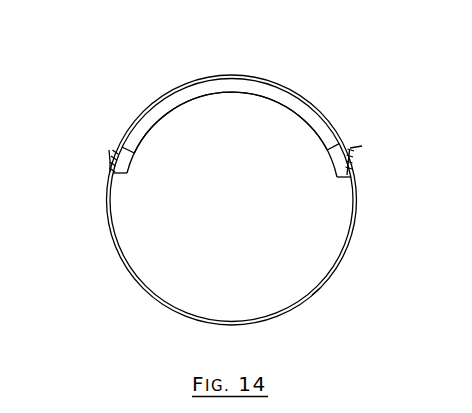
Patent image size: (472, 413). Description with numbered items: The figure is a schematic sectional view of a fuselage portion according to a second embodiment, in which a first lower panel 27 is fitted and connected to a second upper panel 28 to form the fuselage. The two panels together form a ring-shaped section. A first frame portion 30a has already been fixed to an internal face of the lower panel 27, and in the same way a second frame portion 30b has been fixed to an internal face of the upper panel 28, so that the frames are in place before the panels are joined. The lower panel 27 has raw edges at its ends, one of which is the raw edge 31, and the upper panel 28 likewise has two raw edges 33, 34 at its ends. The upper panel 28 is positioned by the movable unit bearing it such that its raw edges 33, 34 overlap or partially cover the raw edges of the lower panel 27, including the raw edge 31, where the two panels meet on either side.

The first lower panel 27 is at (321, 289).
The second upper panel 28 is at (278, 81).
The first frame portion 30a is at (236, 308).
The second frame portion 30b is at (233, 92).
The raw edge 31 is at (356, 160).
The raw edge 33 is at (108, 163).
The raw edge 34 is at (119, 152).